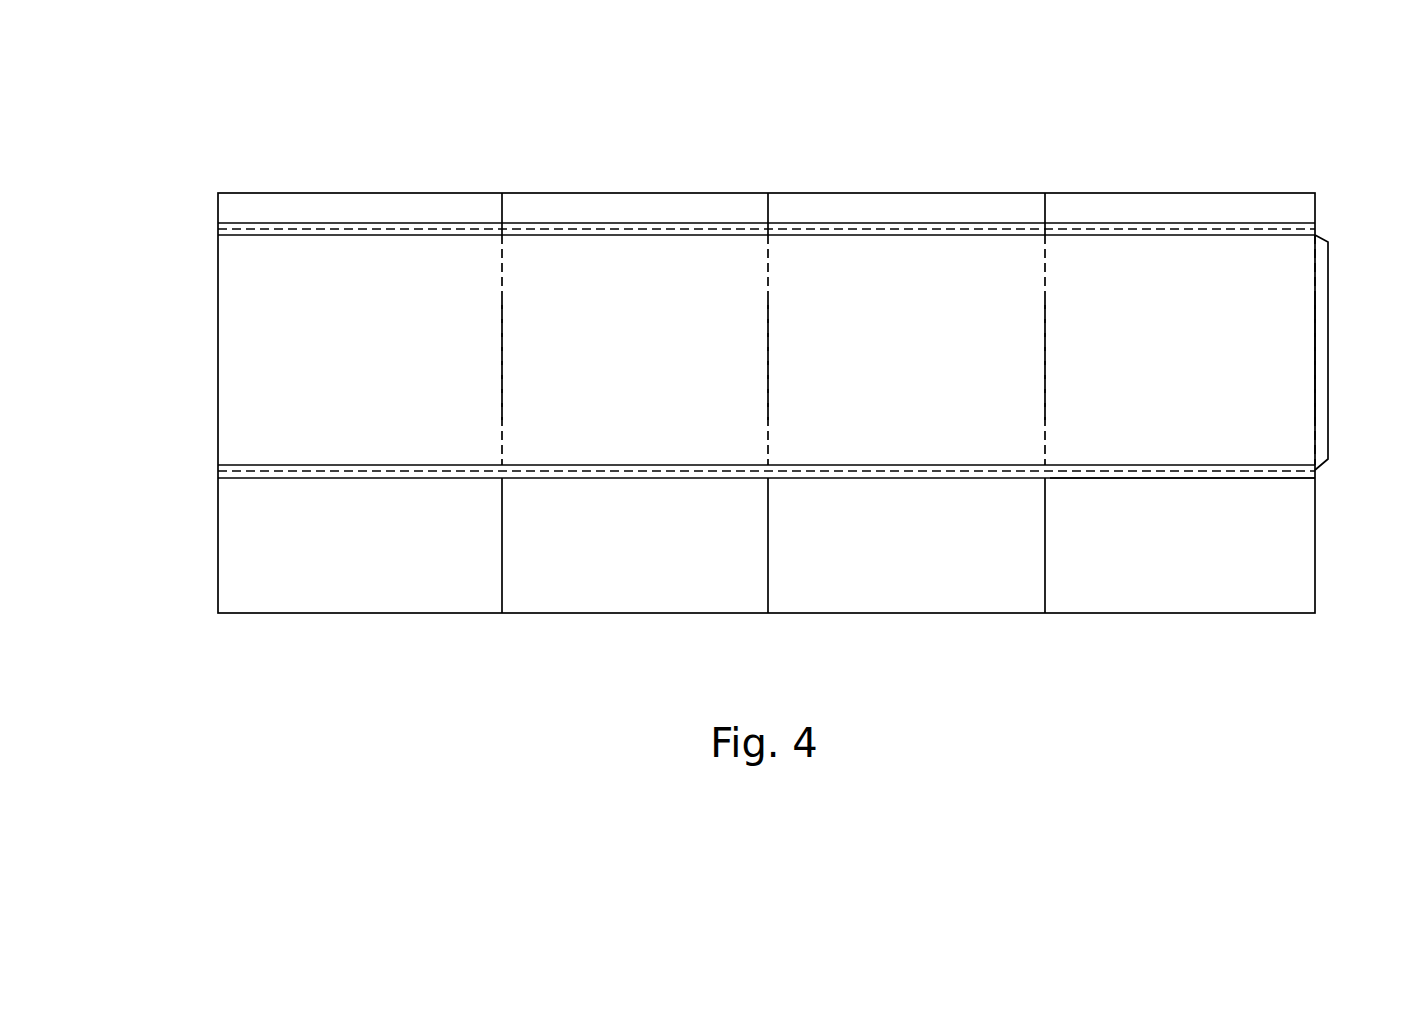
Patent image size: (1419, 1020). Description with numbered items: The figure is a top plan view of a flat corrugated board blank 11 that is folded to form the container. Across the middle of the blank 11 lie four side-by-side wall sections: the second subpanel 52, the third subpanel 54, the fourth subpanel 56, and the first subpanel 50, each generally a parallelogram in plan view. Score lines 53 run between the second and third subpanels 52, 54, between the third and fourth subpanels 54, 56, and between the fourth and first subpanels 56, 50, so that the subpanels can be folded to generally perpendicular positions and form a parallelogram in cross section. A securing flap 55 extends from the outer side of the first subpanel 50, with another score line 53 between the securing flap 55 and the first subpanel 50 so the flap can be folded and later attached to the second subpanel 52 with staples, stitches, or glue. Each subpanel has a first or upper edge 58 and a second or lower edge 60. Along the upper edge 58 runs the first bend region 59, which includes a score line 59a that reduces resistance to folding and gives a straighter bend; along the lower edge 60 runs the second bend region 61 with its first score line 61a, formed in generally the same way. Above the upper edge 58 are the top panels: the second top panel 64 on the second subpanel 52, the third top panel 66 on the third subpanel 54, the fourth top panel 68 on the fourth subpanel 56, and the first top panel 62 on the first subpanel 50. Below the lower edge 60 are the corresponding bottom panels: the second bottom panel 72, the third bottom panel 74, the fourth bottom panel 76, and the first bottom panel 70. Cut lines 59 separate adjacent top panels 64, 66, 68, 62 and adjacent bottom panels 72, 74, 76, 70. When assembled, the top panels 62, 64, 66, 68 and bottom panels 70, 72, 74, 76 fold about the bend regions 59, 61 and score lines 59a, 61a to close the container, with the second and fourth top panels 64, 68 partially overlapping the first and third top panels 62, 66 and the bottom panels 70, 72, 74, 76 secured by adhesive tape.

The blank 11 is at (641, 118).
The first subpanel 50 is at (1195, 362).
The second subpanel 52 is at (375, 362).
The score lines 53 is at (502, 407).
The third subpanel 54 is at (612, 362).
The securing flap 55 is at (1330, 405).
The fourth subpanel 56 is at (920, 362).
The first or upper edge 58 is at (218, 231).
The first bend region 59 is at (503, 212).
The score line 59a is at (218, 229).
The second or lower edge 60 is at (218, 470).
The second bend region 61 is at (1316, 471).
The first score line 61a is at (218, 473).
The first top panel 62 is at (1181, 210).
The second top panel 64 is at (366, 210).
The third top panel 66 is at (654, 213).
The fourth top panel 68 is at (918, 210).
The first bottom panel 70 is at (1195, 555).
The second bottom panel 72 is at (365, 562).
The third bottom panel 74 is at (637, 562).
The fourth bottom panel 76 is at (887, 562).